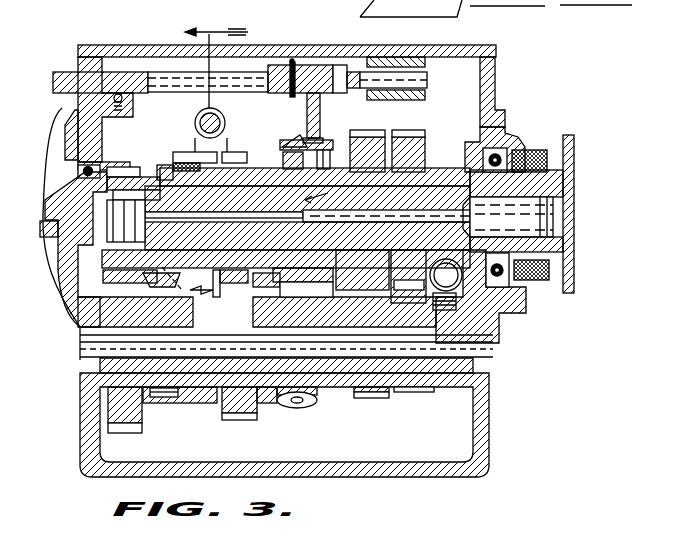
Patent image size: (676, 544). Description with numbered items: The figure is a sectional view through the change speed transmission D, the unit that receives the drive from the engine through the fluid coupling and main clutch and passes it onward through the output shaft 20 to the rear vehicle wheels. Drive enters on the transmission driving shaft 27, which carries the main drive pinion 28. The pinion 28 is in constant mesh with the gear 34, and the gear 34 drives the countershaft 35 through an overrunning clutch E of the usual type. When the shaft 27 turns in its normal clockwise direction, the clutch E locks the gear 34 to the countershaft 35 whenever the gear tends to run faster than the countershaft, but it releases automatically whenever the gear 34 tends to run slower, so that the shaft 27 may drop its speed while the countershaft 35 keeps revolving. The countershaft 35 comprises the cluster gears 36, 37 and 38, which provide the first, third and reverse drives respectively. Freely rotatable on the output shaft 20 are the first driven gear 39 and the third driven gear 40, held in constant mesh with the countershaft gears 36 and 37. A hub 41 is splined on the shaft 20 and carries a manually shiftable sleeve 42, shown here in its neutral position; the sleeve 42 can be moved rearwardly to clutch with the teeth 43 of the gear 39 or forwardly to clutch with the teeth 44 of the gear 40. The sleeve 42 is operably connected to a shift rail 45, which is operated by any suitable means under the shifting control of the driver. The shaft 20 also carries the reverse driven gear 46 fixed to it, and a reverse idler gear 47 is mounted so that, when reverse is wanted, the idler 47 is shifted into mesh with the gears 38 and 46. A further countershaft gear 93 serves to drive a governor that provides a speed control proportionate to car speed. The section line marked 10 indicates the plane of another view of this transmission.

The speed ratio transmission D is at (130, 45).
The section line 10 is at (205, 169).
The output shaft 20 is at (575, 178).
The transmission driving shaft 27 is at (40, 230).
The main drive pinion 28 is at (118, 167).
The gear 34 is at (125, 427).
The countershaft 35 is at (333, 392).
The cluster gear 36 is at (373, 393).
The cluster gear 37 is at (233, 420).
The cluster gear 38 is at (414, 388).
The first driven gear 39 is at (370, 136).
The third driven gear 40 is at (236, 150).
The hub 41 is at (320, 187).
The manually shiftable sleeve 42 is at (320, 132).
The teeth 43 is at (337, 150).
The teeth 44 is at (268, 152).
The shift rail 45 is at (312, 72).
The reverse driven gear 46 is at (415, 137).
The reverse idler gear 47 is at (446, 304).
The countershaft gear 93 is at (302, 307).
The overrunning clutch E is at (165, 390).